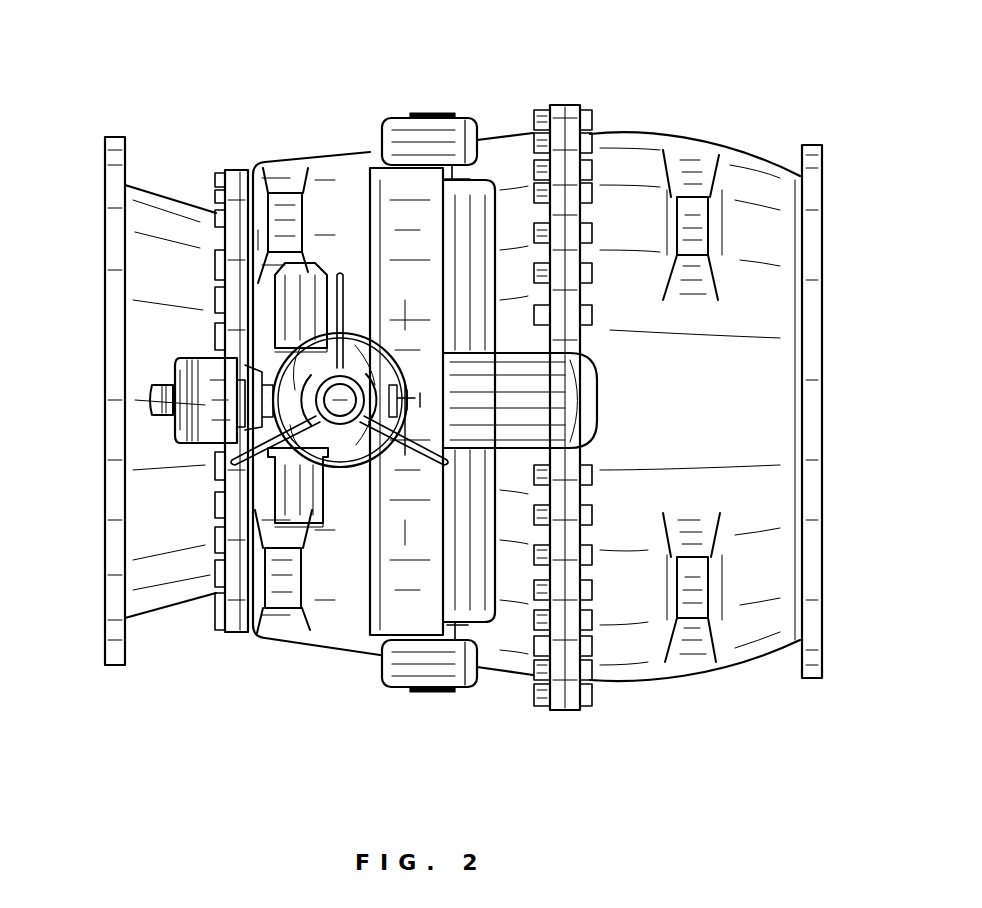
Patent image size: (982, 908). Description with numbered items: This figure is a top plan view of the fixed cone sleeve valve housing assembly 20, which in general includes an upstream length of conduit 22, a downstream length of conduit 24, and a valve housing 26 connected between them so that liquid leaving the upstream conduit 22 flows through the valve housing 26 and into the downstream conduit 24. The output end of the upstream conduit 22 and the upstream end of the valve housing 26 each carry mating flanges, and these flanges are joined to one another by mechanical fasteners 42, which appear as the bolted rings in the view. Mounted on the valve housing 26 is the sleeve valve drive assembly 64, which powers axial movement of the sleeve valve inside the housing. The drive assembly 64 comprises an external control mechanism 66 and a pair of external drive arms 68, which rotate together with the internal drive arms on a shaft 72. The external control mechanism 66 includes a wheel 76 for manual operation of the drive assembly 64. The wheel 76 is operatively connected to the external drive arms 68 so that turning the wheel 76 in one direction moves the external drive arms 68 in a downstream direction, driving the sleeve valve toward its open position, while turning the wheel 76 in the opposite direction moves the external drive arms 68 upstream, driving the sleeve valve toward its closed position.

The housing assembly 20 is at (742, 98).
The upstream length of conduit 22 is at (160, 195).
The downstream length of conduit 24 is at (665, 132).
The valve housing 26 is at (505, 128).
The mechanical fasteners 42 is at (215, 540).
The sleeve valve drive assembly 64 is at (170, 452).
The external control mechanism 66 is at (215, 375).
The external drive arms 68 is at (386, 118).
The shaft 72 is at (430, 113).
The wheel 76 is at (345, 490).